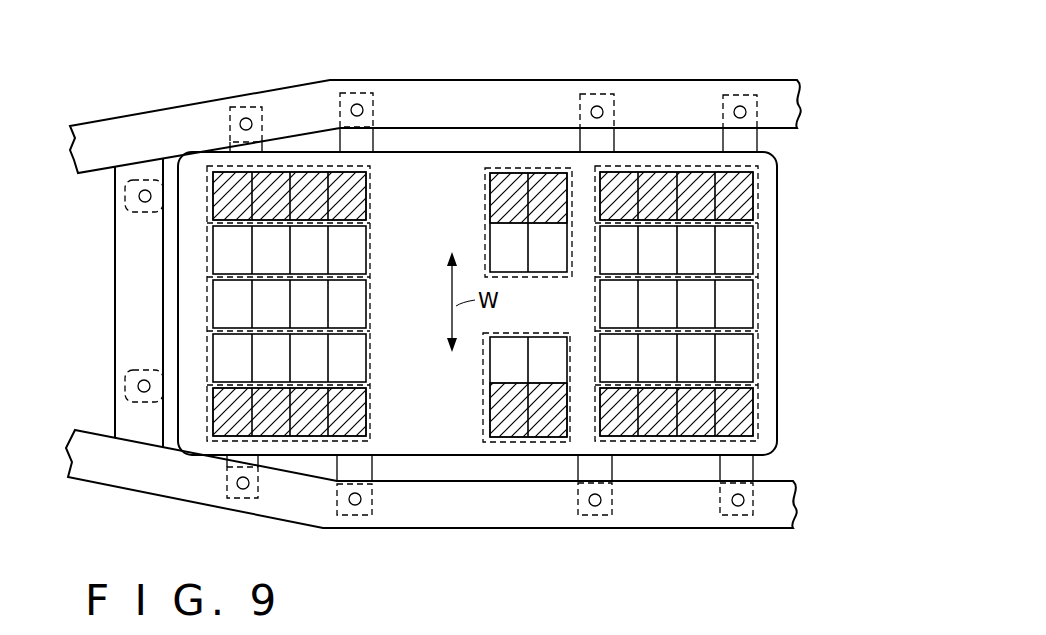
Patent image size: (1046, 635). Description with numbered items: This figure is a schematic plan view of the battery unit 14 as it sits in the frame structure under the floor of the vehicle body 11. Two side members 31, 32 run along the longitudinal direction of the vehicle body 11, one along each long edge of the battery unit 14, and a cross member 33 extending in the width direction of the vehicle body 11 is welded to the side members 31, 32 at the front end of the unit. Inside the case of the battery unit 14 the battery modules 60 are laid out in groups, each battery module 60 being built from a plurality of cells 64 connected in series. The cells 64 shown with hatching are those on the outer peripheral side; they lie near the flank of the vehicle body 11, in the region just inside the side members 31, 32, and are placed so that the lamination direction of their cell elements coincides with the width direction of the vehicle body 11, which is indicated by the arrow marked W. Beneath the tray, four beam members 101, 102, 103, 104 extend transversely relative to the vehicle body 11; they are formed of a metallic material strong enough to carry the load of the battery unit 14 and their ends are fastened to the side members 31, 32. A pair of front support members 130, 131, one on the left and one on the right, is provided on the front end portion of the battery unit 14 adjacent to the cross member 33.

The vehicle body 11 is at (770, 82).
The battery unit 14 is at (484, 150).
The side member 31 is at (443, 530).
The side member 32 is at (418, 97).
The cross member 33 is at (133, 301).
The battery module 60 is at (208, 206).
The cell 64 is at (344, 182).
The beam member 101 is at (227, 478).
The beam member 102 is at (372, 500).
The beam member 103 is at (578, 500).
The beam member 104 is at (753, 500).
The front support member 130 is at (125, 380).
The front support member 131 is at (125, 196).